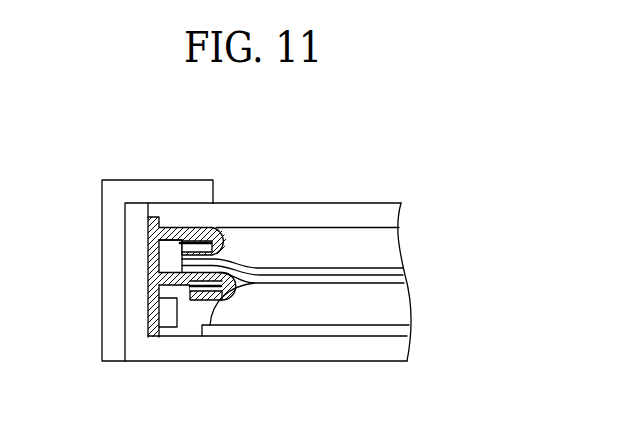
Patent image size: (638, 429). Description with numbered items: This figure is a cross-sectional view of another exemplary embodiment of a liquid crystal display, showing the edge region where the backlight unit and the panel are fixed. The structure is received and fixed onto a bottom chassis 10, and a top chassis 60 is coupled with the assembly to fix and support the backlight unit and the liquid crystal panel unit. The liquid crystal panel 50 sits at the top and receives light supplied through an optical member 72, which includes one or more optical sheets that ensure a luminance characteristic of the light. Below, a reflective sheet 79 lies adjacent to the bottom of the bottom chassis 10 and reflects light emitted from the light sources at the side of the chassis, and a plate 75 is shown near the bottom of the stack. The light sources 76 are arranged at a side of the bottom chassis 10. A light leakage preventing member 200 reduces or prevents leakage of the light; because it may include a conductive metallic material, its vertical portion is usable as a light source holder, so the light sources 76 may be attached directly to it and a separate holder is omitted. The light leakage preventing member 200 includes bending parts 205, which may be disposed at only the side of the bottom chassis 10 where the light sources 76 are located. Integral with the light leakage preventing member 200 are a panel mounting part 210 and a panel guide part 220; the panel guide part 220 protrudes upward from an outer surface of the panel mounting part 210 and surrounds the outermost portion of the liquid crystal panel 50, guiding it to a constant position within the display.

The bottom chassis 10 is at (314, 350).
The liquid crystal panel 50 is at (319, 215).
The top chassis 60 is at (115, 223).
The optical member 72 is at (396, 270).
The support plate 75 is at (390, 332).
The light source 76 is at (168, 313).
The reflective sheet 79 is at (382, 304).
The light leakage preventing member 200 is at (213, 283).
The bending part 205 is at (190, 288).
The panel mounting part 210 is at (175, 236).
The panel guide part 220 is at (155, 227).